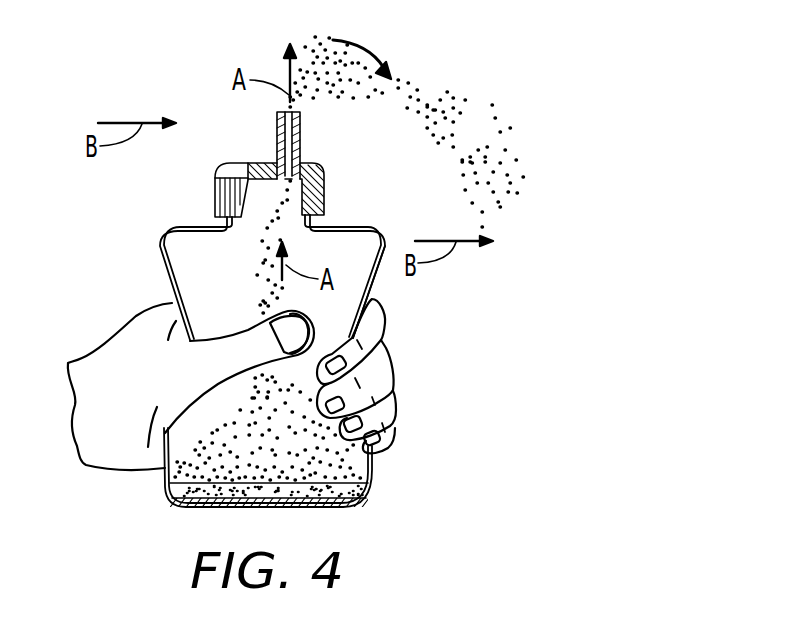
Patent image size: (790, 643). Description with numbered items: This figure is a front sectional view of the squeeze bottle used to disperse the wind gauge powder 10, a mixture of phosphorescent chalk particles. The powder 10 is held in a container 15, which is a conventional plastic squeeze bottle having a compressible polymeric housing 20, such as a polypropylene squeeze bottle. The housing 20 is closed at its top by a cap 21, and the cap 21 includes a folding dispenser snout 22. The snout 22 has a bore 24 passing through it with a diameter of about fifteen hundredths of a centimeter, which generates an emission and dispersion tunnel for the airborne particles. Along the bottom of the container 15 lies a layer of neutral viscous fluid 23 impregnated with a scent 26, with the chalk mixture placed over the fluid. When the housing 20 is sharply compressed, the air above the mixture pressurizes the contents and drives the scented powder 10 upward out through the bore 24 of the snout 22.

The wind gauge powder 10 is at (489, 141).
The container 15 is at (166, 478).
The compressible polymeric housing 20 is at (383, 245).
The cap 21 is at (215, 190).
The folding dispenser snout 22 is at (301, 152).
The layer of neutral viscous fluid 23 is at (350, 484).
The bore 24 is at (277, 132).
The scent 26 is at (340, 505).